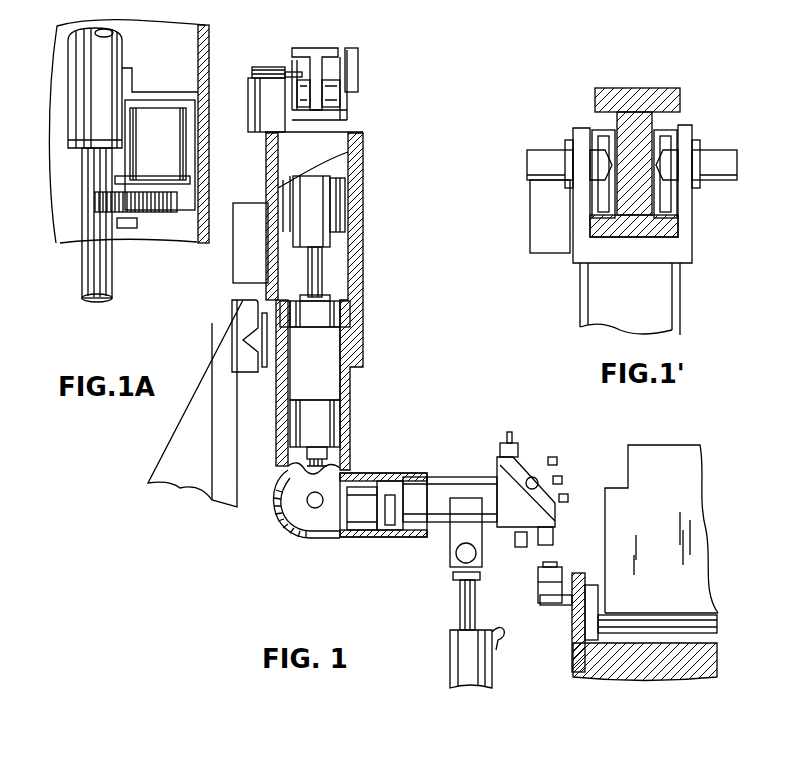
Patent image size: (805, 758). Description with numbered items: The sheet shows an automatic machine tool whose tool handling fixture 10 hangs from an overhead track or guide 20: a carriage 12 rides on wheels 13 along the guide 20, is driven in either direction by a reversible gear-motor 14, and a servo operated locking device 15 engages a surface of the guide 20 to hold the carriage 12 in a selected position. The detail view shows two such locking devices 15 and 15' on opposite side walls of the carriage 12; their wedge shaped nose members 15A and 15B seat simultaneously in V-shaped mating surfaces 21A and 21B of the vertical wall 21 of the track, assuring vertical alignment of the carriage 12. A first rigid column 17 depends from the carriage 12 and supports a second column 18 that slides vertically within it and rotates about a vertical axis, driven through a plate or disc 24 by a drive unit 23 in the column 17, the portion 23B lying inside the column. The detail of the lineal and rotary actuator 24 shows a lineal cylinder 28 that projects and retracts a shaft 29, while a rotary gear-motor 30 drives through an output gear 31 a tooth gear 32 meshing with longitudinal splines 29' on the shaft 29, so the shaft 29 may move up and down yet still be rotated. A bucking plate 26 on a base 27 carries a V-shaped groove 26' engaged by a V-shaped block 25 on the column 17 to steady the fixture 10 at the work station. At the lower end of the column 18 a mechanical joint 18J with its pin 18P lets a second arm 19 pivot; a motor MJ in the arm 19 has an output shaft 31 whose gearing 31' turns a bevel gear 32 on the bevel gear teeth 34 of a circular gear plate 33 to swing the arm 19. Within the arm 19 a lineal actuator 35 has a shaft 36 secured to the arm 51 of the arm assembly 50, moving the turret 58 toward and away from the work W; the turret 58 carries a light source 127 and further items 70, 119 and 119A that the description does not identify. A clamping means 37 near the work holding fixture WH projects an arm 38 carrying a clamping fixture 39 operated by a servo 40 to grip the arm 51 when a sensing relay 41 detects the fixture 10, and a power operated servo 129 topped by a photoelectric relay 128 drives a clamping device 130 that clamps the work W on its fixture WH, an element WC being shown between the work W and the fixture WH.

In FIG. 1, the tool handling fixture 10 is at (405, 177).
In FIG. 1, the carriage 12 is at (350, 118).
In FIG. 1', the carriage 12 is at (690, 212).
In FIG. 1, the wheels 13 is at (327, 102).
In FIG. 1', the reversible gear-motor 14 is at (556, 232).
In FIG. 1', the servo operated locking device 15 is at (736, 159).
In FIG. 1', the locking device 15' is at (525, 164).
In FIG. 1', the wedge shaped nose member 15A is at (675, 160).
In FIG. 1', the wedge shaped nose member 15B is at (597, 160).
In FIG. 1A, the first rigid column 17 is at (208, 155).
In FIG. 1, the first rigid column 17 is at (362, 158).
In FIG. 1', the first rigid column 17 is at (668, 314).
In FIG. 1, the second column 18 is at (348, 392).
In FIG. 1, the mechanical joint 18J is at (303, 513).
In FIG. 1, the pin 18P is at (314, 505).
In FIG. 1, the second arm 19 is at (393, 475).
In FIG. 1, the track or guide 20 is at (305, 47).
In FIG. 1', the track or guide 20 is at (680, 92).
In FIG. 1', the vertical wall 21 is at (635, 125).
In FIG. 1', the V-shaped mating surface 21A is at (665, 135).
In FIG. 1', the V-shaped mating surface 21B is at (603, 135).
In FIG. 1, the positional controller 23 is at (260, 279).
In FIG. 1A, the cylinder 23B is at (162, 45).
In FIG. 1, the cylinder 23B is at (340, 240).
In FIG. 1, the lineal and rotary actuator 24 is at (310, 328).
In FIG. 1, the V-shaped block 25 is at (257, 348).
In FIG. 1, the bucking plate 26 is at (225, 325).
In FIG. 1, the V-shaped groove 26' is at (203, 318).
In FIG. 1, the base 27 is at (255, 364).
In FIG. 1A, the lineal motor or cylinder 28 is at (109, 45).
In FIG. 1A, the shaft 29 is at (97, 246).
In FIG. 1, the shaft 29 is at (349, 274).
In FIG. 1A, the longitudinal splines 29' is at (68, 311).
In FIG. 1A, the rotary gear-motor 30 is at (160, 152).
In FIG. 1A, the output gear 31 is at (140, 233).
In FIG. 1, the gear 31' is at (347, 453).
In FIG. 1A, the tooth gear 32 is at (120, 237).
In FIG. 1, the tooth gear 32 is at (287, 469).
In FIG. 1, the circular gear plate 33 is at (282, 524).
In FIG. 1, the bevel gear teeth 34 is at (278, 508).
In FIG. 1, the lineal actuator 35 is at (360, 513).
In FIG. 1, the shaft 36 is at (384, 527).
In FIG. 1, the positioning and clamping means 37 is at (452, 683).
In FIG. 1, the projectable arm 38 is at (463, 610).
In FIG. 1, the clamping fixture 39 is at (450, 533).
In FIG. 1, the servo 40 is at (462, 556).
In FIG. 1, the sensing relay 41 is at (496, 640).
In FIG. 1, the arm assembly 50 is at (448, 460).
In FIG. 1, the turret base arm 51 is at (442, 492).
In FIG. 1, the turret 58 is at (527, 457).
In FIG. 1, the nut 70 is at (502, 452).
In FIG. 1, the bolt 119 is at (517, 547).
In FIG. 1, the tab 119A is at (355, 67).
In FIG. 1, the light source 127 is at (554, 537).
In FIG. 1, the photoelectric relay 128 is at (540, 574).
In FIG. 1, the power operated servo 129 is at (547, 600).
In FIG. 1, the clamping device 130 is at (590, 603).
In FIG. 1, the reversible gear motor MJ is at (315, 423).
In FIG. 1, the work piece W is at (700, 495).
In FIG. 1, the workpiece clamp WC is at (720, 623).
In FIG. 1, the work holding fixture WH is at (710, 657).